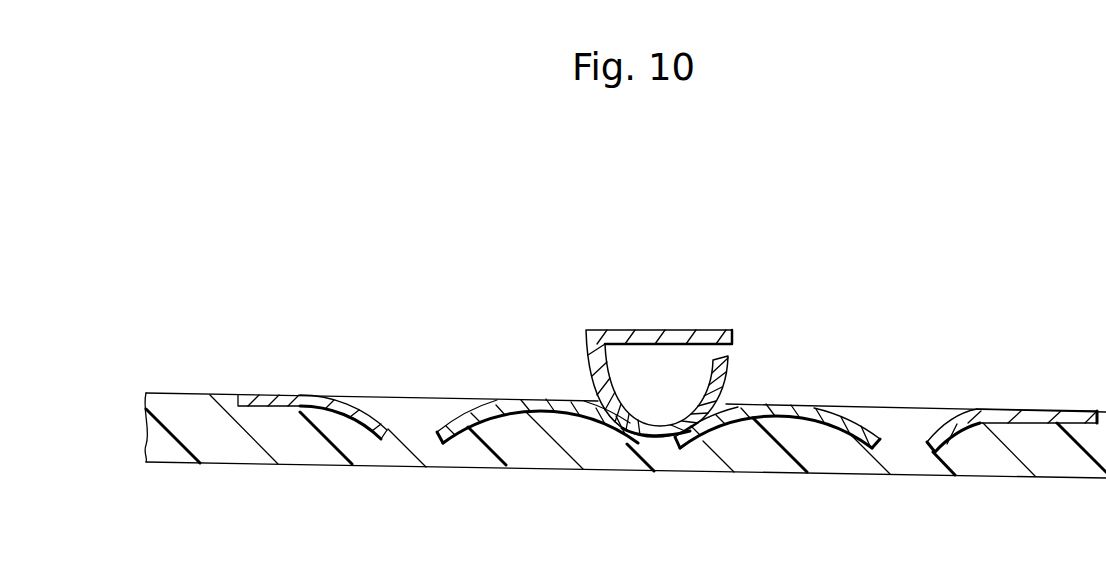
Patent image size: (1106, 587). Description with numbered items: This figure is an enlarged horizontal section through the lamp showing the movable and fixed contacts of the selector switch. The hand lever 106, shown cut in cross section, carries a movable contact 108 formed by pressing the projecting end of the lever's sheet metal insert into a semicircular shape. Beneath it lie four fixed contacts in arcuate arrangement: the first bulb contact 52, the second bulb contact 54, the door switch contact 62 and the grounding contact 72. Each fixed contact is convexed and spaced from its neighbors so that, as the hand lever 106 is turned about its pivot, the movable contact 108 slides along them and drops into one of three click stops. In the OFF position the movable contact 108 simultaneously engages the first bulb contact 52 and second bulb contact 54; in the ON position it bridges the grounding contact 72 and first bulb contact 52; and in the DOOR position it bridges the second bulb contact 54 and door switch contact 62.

The first bulb contact 52 is at (843, 423).
The second bulb contact 54 is at (522, 397).
The door switch contact 62 is at (304, 397).
The grounding contact 72 is at (1062, 410).
The hand lever 106 is at (628, 331).
The movable contact 108 is at (727, 377).